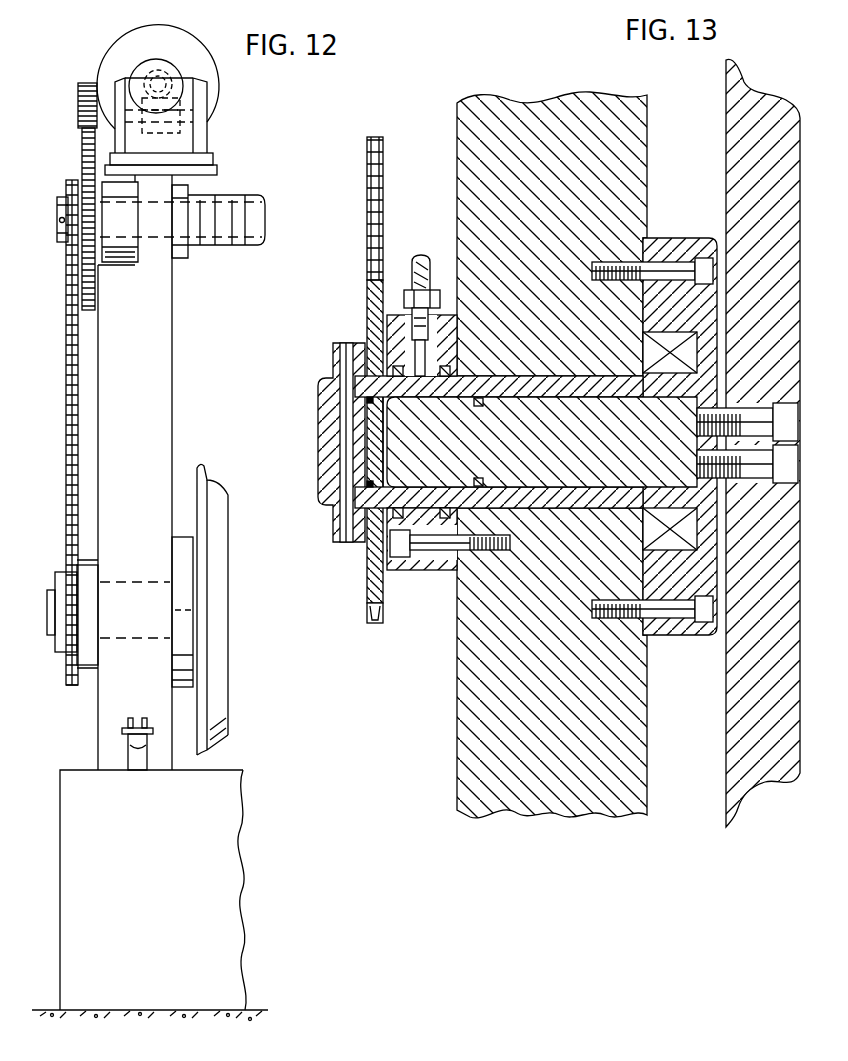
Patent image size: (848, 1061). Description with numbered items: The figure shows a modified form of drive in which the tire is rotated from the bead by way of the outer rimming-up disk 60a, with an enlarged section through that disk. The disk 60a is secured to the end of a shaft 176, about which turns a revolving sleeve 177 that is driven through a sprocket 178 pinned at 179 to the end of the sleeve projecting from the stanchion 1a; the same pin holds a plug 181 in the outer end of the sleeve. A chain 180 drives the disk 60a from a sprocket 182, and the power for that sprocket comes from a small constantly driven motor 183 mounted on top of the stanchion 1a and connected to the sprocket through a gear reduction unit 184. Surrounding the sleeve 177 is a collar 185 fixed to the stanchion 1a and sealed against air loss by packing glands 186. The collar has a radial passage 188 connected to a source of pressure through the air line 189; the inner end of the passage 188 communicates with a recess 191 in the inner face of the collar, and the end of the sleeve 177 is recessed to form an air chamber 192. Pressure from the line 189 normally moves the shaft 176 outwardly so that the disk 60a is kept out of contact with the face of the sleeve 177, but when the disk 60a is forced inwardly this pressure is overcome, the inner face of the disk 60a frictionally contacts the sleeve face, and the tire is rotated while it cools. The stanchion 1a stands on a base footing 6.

In FIG. 12, the stanchion 1a is at (163, 357).
In FIG. 13, the stanchion 1a is at (463, 735).
In FIG. 12, the base footing 6 is at (238, 932).
In FIG. 12, the outer rimming-up disk 60a is at (214, 484).
In FIG. 13, the outer rimming-up disk 60a is at (762, 775).
In FIG. 13, the shaft 176 is at (552, 472).
In FIG. 13, the revolving sleeve 177 is at (522, 380).
In FIG. 12, the sprocket 178 is at (72, 686).
In FIG. 13, the sprocket 178 is at (380, 288).
In FIG. 13, the pin 179 is at (340, 353).
In FIG. 12, the chain 180 is at (68, 372).
In FIG. 13, the chain 180 is at (384, 187).
In FIG. 13, the plug 181 is at (325, 438).
In FIG. 12, the sprocket 182 is at (67, 218).
In FIG. 12, the motor 183 is at (199, 44).
In FIG. 12, the gear reduction unit 184 is at (79, 108).
In FIG. 13, the collar 185 is at (438, 570).
In FIG. 13, the packing glands 186 is at (397, 372).
In FIG. 13, the radial passage 188 is at (422, 358).
In FIG. 13, the air line 189 is at (432, 272).
In FIG. 13, the recess 191 is at (412, 532).
In FIG. 13, the air chamber 192 is at (383, 463).